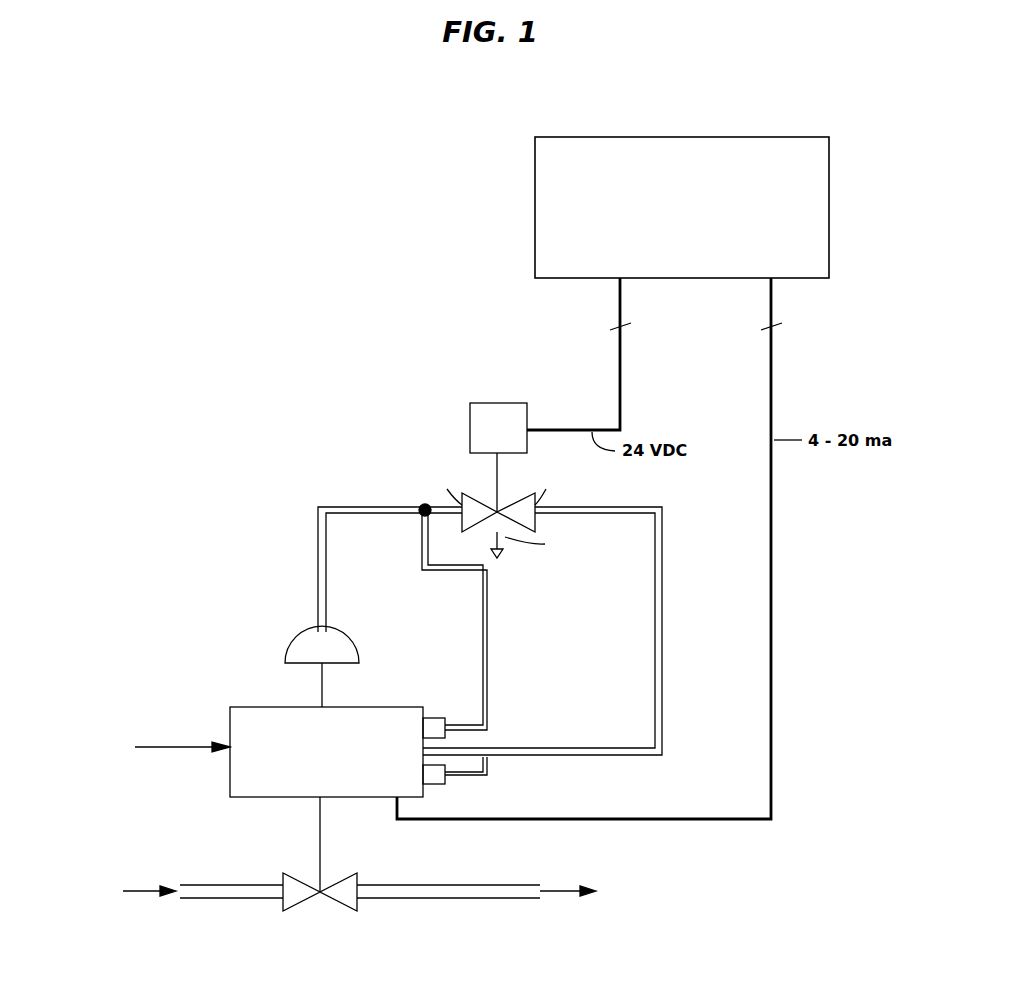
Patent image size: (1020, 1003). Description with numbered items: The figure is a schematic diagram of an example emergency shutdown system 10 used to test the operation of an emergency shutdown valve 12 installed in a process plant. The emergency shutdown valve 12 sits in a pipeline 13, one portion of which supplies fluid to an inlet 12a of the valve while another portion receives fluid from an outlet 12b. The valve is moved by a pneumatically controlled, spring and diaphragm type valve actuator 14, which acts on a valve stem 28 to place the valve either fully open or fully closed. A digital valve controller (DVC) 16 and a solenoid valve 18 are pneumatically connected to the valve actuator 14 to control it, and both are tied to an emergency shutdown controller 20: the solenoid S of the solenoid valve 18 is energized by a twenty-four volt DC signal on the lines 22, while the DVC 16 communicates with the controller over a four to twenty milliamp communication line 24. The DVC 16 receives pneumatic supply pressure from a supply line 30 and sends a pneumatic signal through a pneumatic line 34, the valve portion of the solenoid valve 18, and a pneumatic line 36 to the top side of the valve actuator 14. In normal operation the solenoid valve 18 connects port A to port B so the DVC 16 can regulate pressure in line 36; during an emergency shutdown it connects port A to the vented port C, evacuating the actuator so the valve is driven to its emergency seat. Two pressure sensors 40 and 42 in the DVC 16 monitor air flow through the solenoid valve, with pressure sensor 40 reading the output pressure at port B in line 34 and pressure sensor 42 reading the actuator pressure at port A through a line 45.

The emergency shutdown system 10 is at (370, 174).
The emergency shutdown valve 12 is at (327, 899).
The inlet 12a is at (285, 893).
The outlet 12b is at (362, 892).
The pipeline 13 is at (208, 899).
The valve actuator 14 is at (300, 641).
The digital valve controller (DVC) 16 is at (264, 706).
The solenoid valve 18 is at (446, 444).
The emergency shutdown controller 20 is at (829, 203).
The power lines 22 is at (618, 360).
The communication line 24 is at (774, 360).
The valve stem 28 is at (321, 832).
The supply line 30 is at (176, 745).
The pneumatic line 34 is at (654, 651).
The pneumatic line 36 is at (317, 536).
The pressure sensor 40 is at (430, 785).
The pressure sensor 42 is at (432, 717).
The line 45 is at (482, 651).